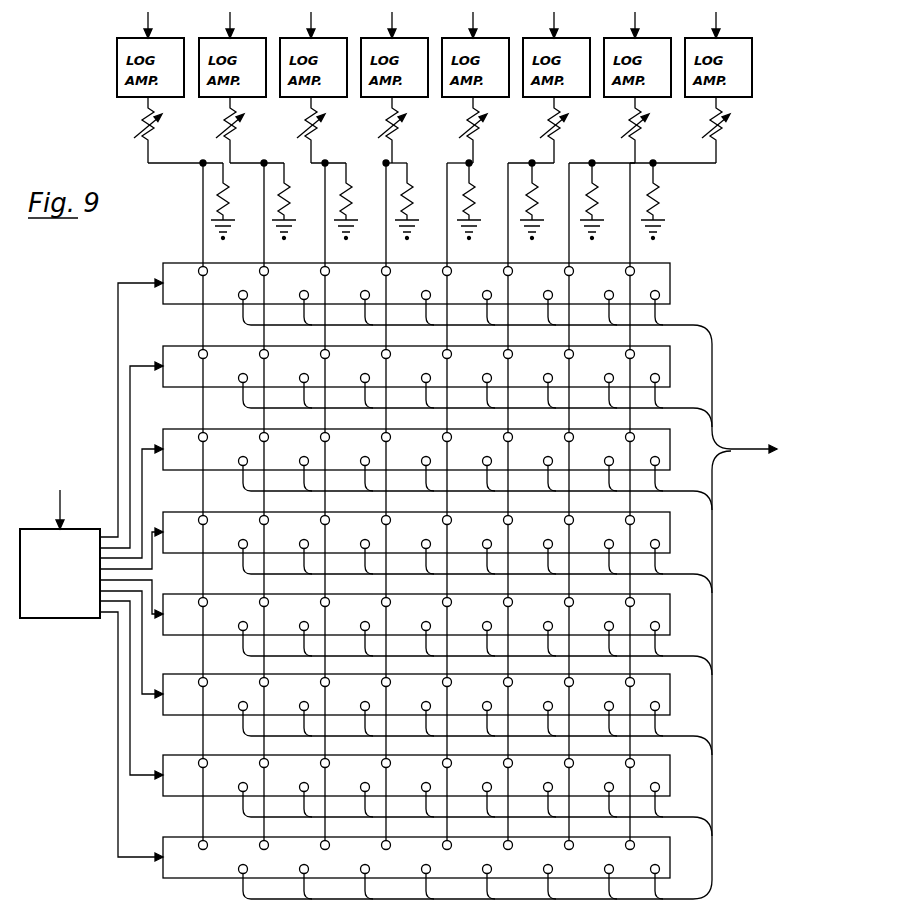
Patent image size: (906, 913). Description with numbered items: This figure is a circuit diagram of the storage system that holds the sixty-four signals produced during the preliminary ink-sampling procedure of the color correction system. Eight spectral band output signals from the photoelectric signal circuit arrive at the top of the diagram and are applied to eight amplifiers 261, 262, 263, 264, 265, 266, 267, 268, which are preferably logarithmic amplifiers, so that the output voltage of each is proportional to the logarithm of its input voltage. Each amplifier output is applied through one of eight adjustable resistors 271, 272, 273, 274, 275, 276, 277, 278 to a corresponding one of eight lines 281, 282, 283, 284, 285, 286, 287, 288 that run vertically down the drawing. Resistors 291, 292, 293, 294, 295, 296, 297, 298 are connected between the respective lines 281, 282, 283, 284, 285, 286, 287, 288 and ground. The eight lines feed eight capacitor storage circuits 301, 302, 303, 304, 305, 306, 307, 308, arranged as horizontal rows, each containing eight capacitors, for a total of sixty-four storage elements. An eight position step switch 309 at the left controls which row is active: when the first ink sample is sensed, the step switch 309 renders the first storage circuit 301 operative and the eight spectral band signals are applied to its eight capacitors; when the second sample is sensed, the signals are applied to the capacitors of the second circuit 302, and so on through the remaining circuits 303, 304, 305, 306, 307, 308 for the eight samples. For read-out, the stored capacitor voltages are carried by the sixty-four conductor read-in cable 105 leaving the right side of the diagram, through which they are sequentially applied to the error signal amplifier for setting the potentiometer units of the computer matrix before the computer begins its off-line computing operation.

The read-in cable 105 is at (748, 450).
The amplifier 261 is at (167, 38).
The amplifier 262 is at (250, 38).
The amplifier 263 is at (331, 38).
The amplifier 264 is at (412, 38).
The amplifier 265 is at (493, 38).
The amplifier 266 is at (574, 38).
The amplifier 267 is at (655, 38).
The amplifier 268 is at (736, 38).
The adjustable resistor 271 is at (152, 134).
The adjustable resistor 272 is at (234, 134).
The adjustable resistor 273 is at (315, 134).
The adjustable resistor 274 is at (396, 134).
The adjustable resistor 275 is at (477, 134).
The adjustable resistor 276 is at (558, 134).
The adjustable resistor 277 is at (639, 134).
The adjustable resistor 278 is at (720, 134).
The line 281 is at (201, 253).
The line 282 is at (262, 253).
The line 283 is at (323, 253).
The line 284 is at (384, 253).
The line 285 is at (445, 253).
The line 286 is at (506, 253).
The line 287 is at (567, 253).
The line 288 is at (628, 253).
The grounding resistor 291 is at (227, 200).
The grounding resistor 292 is at (288, 200).
The grounding resistor 293 is at (350, 200).
The grounding resistor 294 is at (411, 200).
The grounding resistor 295 is at (473, 200).
The grounding resistor 296 is at (536, 200).
The grounding resistor 297 is at (596, 200).
The grounding resistor 298 is at (660, 201).
The capacitor storage circuit 301 is at (190, 301).
The capacitor storage circuit 302 is at (190, 384).
The capacitor storage circuit 303 is at (190, 467).
The capacitor storage circuit 304 is at (190, 550).
The capacitor storage circuit 305 is at (190, 632).
The capacitor storage circuit 306 is at (190, 712).
The capacitor storage circuit 307 is at (188, 794).
The capacitor storage circuit 308 is at (165, 880).
The step switch 309 is at (67, 529).